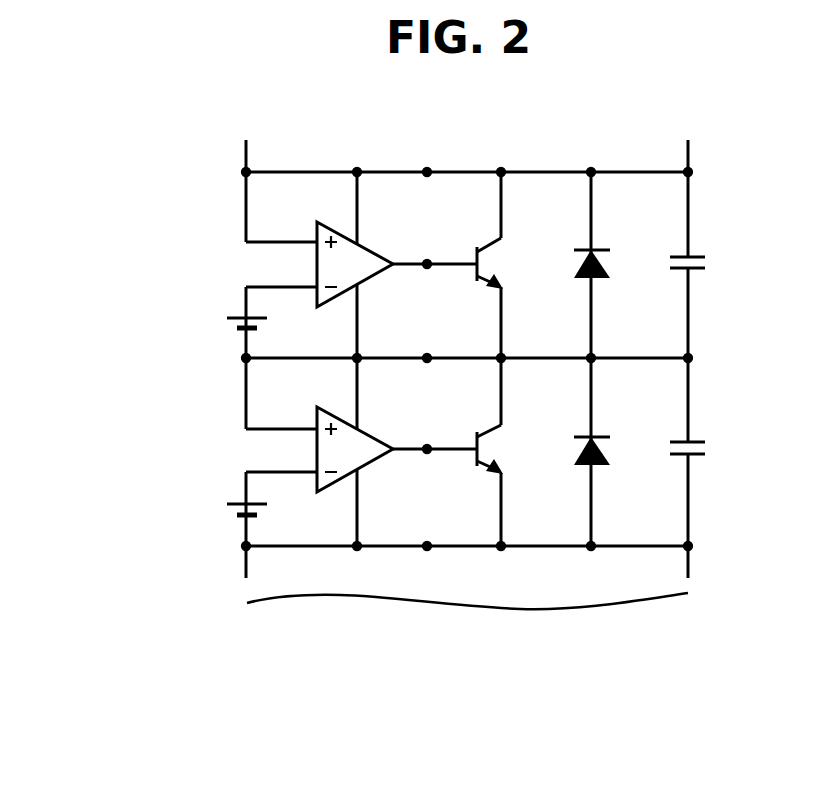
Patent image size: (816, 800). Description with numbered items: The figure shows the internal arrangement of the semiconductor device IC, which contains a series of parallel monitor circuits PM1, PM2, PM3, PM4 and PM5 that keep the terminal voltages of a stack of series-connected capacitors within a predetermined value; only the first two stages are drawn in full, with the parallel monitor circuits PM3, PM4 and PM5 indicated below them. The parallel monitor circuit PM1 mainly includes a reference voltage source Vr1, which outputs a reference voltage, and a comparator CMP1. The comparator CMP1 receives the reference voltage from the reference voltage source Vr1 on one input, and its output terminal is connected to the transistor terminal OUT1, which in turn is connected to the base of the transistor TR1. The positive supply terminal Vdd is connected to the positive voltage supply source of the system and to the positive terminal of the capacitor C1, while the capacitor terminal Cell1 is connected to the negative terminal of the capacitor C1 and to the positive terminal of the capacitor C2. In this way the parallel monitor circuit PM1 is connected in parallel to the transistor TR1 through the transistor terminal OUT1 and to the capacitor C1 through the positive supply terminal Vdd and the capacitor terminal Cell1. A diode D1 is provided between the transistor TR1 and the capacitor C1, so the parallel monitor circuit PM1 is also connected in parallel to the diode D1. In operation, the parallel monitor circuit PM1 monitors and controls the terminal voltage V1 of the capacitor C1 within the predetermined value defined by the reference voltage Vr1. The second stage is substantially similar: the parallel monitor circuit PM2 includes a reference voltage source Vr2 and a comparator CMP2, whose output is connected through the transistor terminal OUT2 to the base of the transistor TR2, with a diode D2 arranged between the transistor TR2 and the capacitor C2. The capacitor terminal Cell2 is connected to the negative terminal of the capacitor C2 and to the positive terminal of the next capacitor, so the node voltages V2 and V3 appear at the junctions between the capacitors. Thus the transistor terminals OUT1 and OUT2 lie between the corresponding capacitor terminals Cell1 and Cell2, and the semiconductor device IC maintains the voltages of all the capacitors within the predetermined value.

The semiconductor device IC is at (322, 156).
The parallel monitor circuit PM1 is at (173, 262).
The parallel monitor circuit PM2 is at (178, 443).
The parallel monitor circuit PM3 is at (92, 612).
The parallel monitor circuit PM4 is at (92, 664).
The parallel monitor circuit PM5 is at (92, 715).
The comparator CMP1 is at (317, 265).
The comparator CMP2 is at (317, 451).
The reference voltage source Vr1 is at (225, 322).
The reference voltage source Vr2 is at (225, 510).
The positive supply terminal Vdd is at (427, 176).
The transistor terminal OUT1 is at (427, 268).
The transistor terminal OUT2 is at (427, 453).
The transistor TR1 is at (508, 265).
The transistor TR2 is at (508, 452).
The diode D1 is at (611, 265).
The diode D2 is at (611, 452).
The capacitor C1 is at (707, 264).
The capacitor C2 is at (707, 451).
The terminal voltage V1 is at (668, 155).
The terminal voltage V2 is at (668, 342).
The terminal voltage V3 is at (668, 530).
The capacitor terminal Cell1 is at (427, 362).
The capacitor terminal Cell2 is at (427, 550).